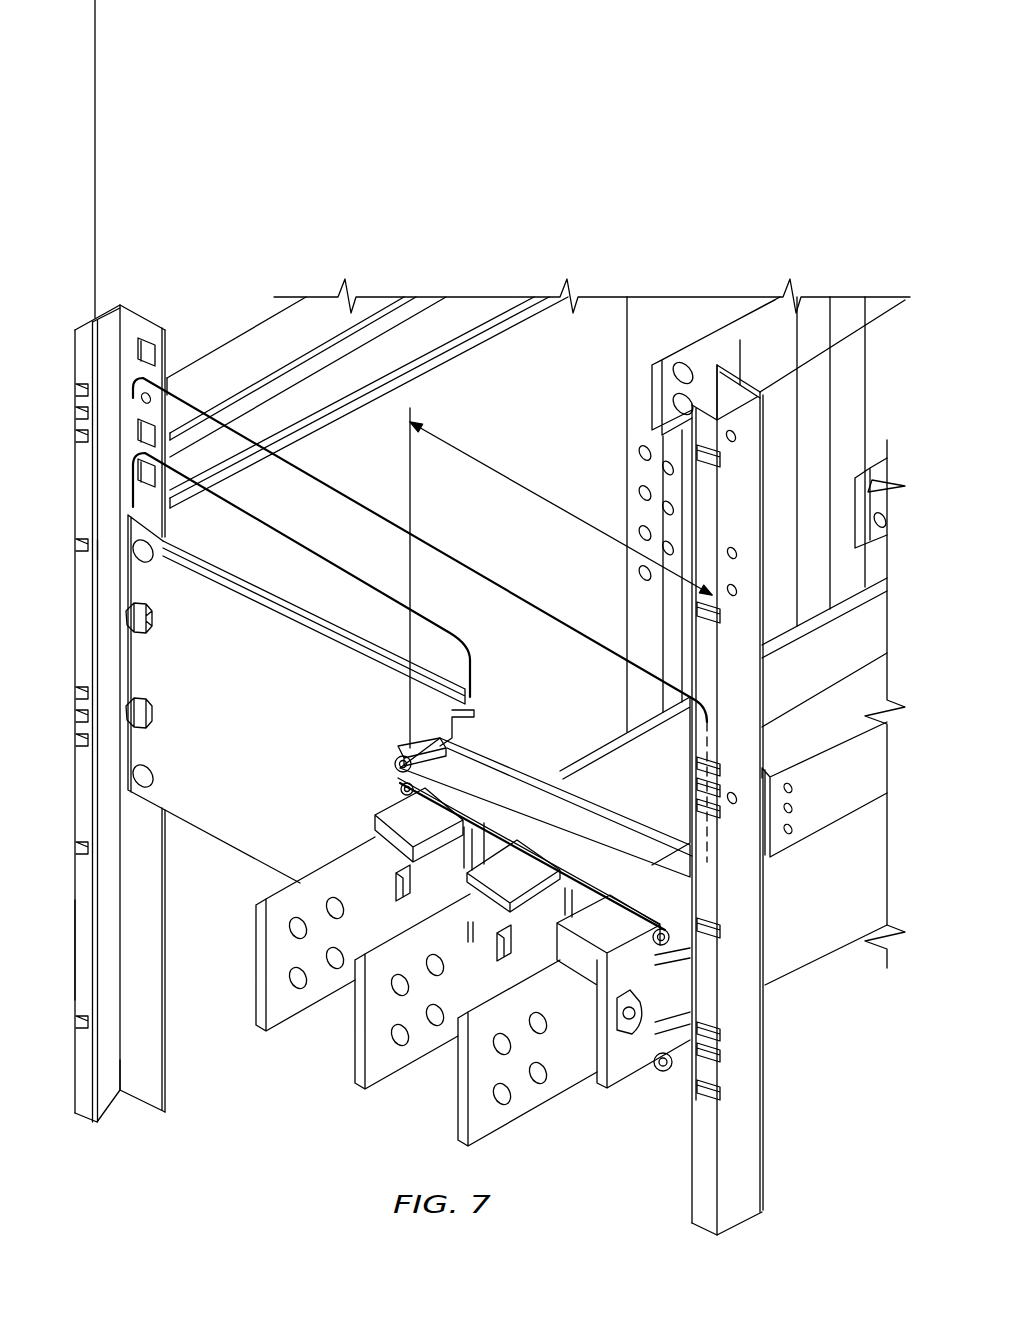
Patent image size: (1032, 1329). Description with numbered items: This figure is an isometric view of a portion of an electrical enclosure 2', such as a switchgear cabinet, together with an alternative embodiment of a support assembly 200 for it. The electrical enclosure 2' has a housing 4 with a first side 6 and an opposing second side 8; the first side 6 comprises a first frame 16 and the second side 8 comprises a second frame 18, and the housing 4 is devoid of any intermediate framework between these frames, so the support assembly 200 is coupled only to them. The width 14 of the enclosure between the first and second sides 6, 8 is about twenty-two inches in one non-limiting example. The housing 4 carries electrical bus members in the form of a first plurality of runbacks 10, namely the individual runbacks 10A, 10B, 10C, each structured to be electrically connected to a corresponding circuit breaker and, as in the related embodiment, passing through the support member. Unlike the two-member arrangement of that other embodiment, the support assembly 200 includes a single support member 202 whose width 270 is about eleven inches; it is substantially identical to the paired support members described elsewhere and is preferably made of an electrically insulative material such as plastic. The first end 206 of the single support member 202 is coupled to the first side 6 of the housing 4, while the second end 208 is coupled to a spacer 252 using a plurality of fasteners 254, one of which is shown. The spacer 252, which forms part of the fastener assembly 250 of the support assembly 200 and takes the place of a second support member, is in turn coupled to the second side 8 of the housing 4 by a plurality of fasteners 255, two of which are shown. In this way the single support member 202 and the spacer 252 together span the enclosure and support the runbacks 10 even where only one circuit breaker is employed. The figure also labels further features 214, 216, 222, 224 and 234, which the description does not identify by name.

The electrical enclosure 2' is at (139, 1120).
The housing 4 is at (70, 950).
The first side 6 is at (775, 1232).
The second side 8 is at (118, 1120).
The first plurality of runbacks 10 is at (426, 1011).
The runback 10A is at (518, 1108).
The runback 10B is at (410, 1052).
The runback 10C is at (292, 1005).
The width of the electrical enclosure 14 is at (740, 350).
The first frame 16 is at (694, 1196).
The second frame 18 is at (82, 780).
The support assembly 200 is at (400, 484).
The single support member 202 is at (516, 778).
The first end 206 is at (668, 1095).
The second end 208 is at (432, 728).
The support bracket 214 is at (607, 810).
The busbar clip 216 is at (393, 822).
The slot 222 is at (510, 966).
The slot 224 is at (406, 903).
The retaining plate 234 is at (420, 736).
The fastener assembly 250 is at (320, 522).
The spacer 252 is at (270, 714).
The fasteners 254 is at (394, 764).
The fasteners 255 is at (152, 711).
The width of the support member 270 is at (574, 514).